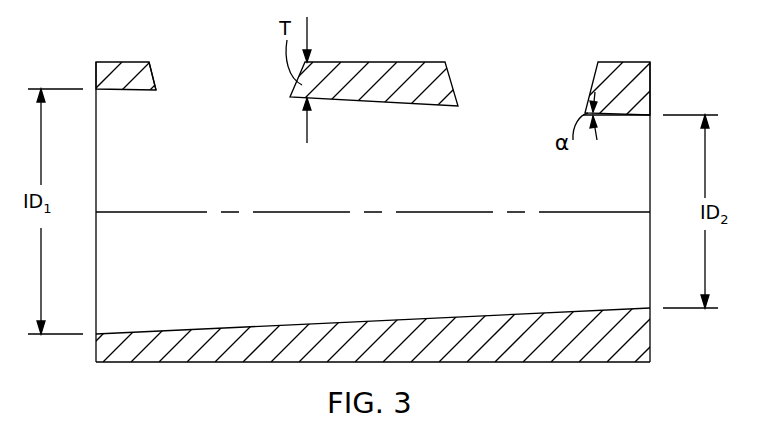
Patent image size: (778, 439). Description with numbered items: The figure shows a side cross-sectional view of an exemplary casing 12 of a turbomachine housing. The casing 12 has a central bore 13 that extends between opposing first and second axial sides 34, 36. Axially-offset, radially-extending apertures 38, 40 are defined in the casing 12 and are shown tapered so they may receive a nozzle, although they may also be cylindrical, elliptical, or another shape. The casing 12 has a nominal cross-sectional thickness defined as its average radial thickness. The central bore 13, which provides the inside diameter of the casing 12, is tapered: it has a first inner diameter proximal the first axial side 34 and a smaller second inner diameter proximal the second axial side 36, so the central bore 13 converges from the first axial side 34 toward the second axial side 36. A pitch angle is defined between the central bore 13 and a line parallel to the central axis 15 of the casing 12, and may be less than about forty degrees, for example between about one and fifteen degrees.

The casing 12 is at (123, 72).
The aperture 38 is at (153, 80).
The aperture 40 is at (457, 101).
The central axis 15 is at (337, 211).
The central bore 13 is at (398, 320).
The first axial side 34 is at (96, 268).
The second axial side 36 is at (650, 255).